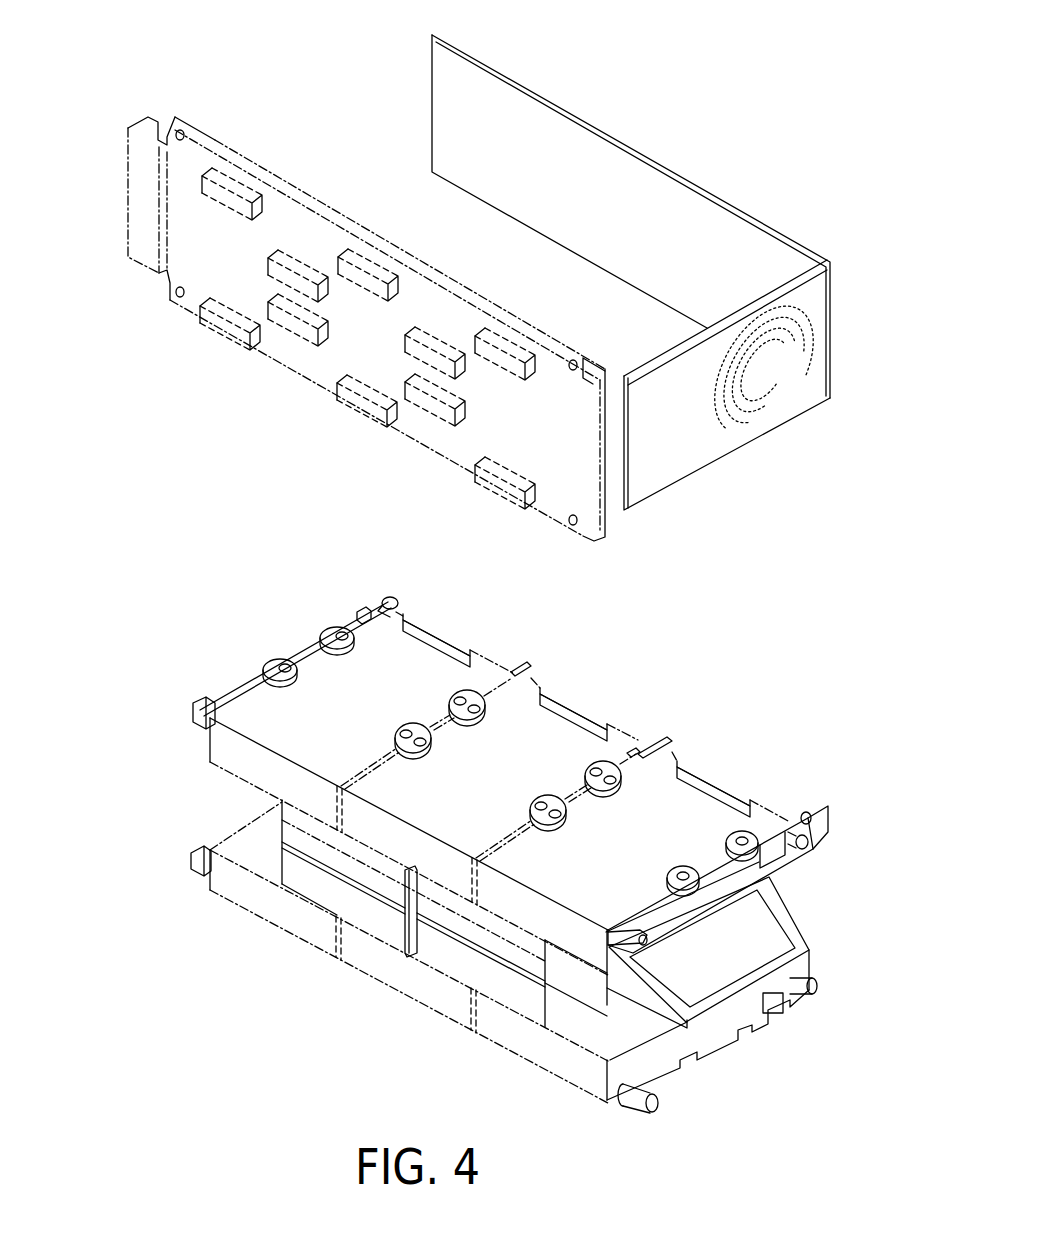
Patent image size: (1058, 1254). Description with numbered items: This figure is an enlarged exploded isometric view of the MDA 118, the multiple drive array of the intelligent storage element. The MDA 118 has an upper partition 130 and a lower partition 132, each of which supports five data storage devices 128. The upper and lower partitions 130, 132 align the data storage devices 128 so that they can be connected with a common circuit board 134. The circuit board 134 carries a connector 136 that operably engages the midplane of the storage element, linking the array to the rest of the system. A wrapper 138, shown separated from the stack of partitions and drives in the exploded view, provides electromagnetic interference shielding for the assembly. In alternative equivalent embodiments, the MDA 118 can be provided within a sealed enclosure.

The MDA 118 is at (700, 38).
The data storage devices 128 is at (312, 672).
The upper partition 130 is at (792, 886).
The lower partition 132 is at (808, 948).
The circuit board 134 is at (186, 122).
The connector 136 is at (147, 122).
The wrapper 138 is at (490, 66).